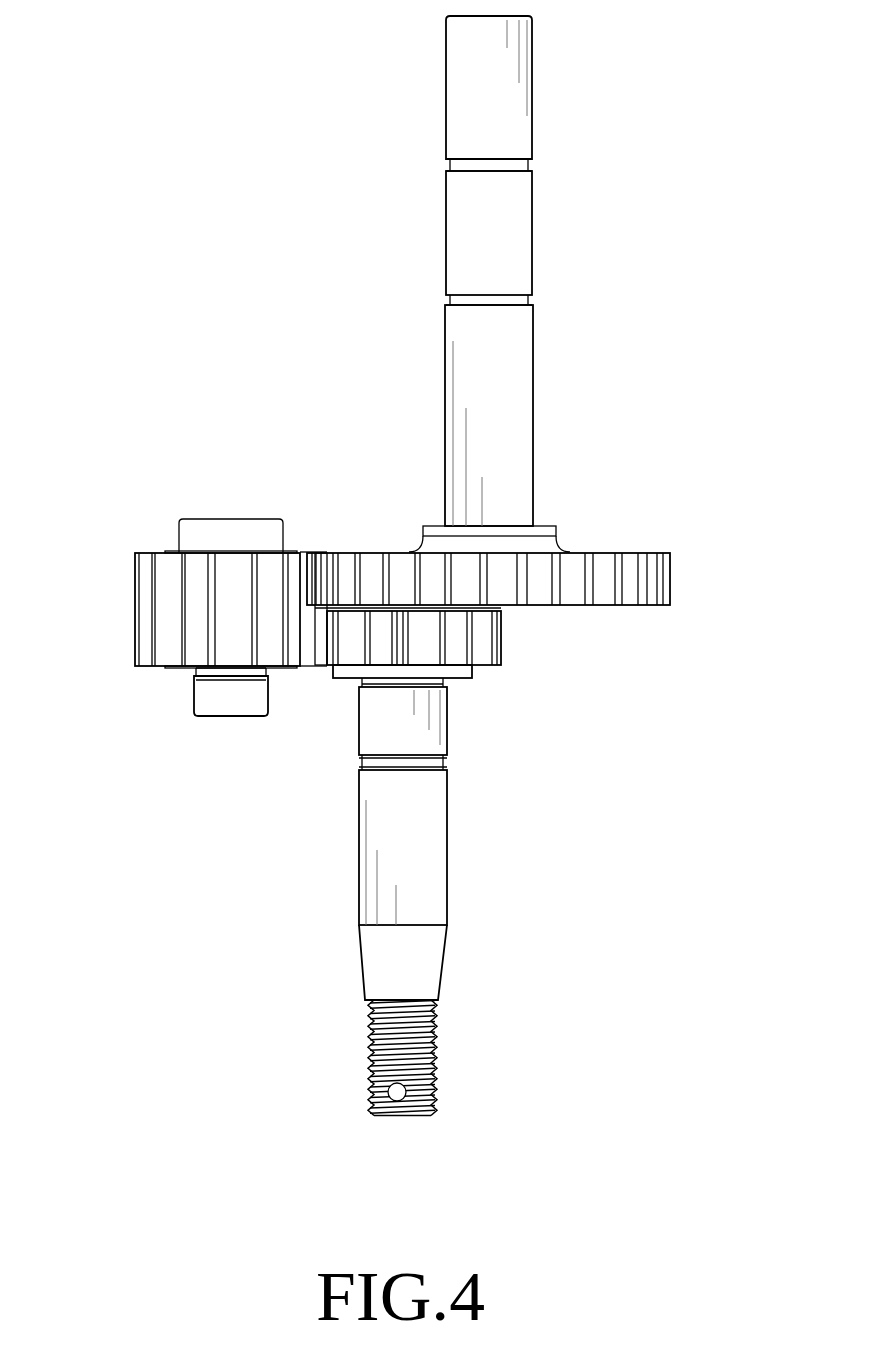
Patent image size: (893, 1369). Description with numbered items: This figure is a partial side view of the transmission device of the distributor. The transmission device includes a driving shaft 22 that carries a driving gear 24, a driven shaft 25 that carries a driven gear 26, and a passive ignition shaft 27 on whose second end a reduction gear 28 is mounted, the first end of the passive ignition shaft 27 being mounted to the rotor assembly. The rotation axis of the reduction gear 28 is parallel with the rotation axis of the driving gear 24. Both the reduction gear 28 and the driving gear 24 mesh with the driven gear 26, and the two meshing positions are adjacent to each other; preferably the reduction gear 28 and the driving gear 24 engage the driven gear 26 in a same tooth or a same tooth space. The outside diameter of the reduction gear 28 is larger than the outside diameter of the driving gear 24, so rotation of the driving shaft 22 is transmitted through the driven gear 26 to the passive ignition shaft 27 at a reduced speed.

The driving shaft 22 is at (437, 828).
The driving gear 24 is at (485, 638).
The driven shaft 25 is at (200, 700).
The driven gear 26 is at (162, 598).
The passive ignition shaft 27 is at (517, 413).
The reduction gear 28 is at (662, 587).